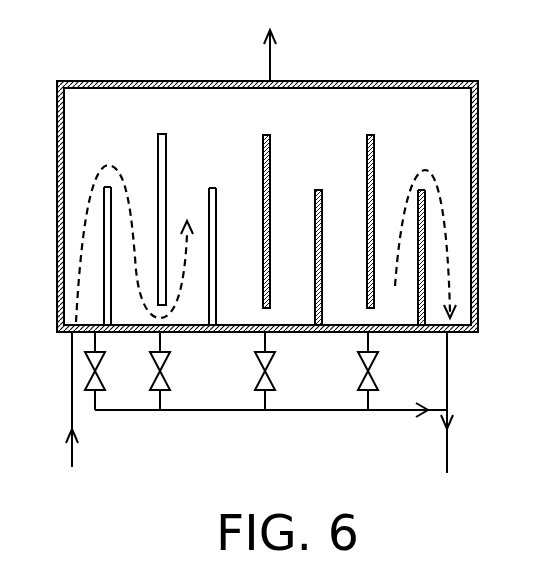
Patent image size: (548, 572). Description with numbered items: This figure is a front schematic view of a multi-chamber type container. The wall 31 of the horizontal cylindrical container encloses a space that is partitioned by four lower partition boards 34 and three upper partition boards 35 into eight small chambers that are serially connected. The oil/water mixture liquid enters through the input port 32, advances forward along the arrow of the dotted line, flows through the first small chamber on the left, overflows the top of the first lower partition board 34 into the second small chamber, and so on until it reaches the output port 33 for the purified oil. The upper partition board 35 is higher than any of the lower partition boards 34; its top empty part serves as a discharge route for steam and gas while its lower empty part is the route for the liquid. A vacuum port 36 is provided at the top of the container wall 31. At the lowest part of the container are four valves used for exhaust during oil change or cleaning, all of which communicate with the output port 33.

The container wall 31 is at (392, 82).
The input port 32 is at (56, 399).
The output port 33 is at (464, 402).
The lower partition board 34 is at (322, 192).
The upper partition board 35 is at (167, 148).
The vacuum port 36 is at (289, 53).